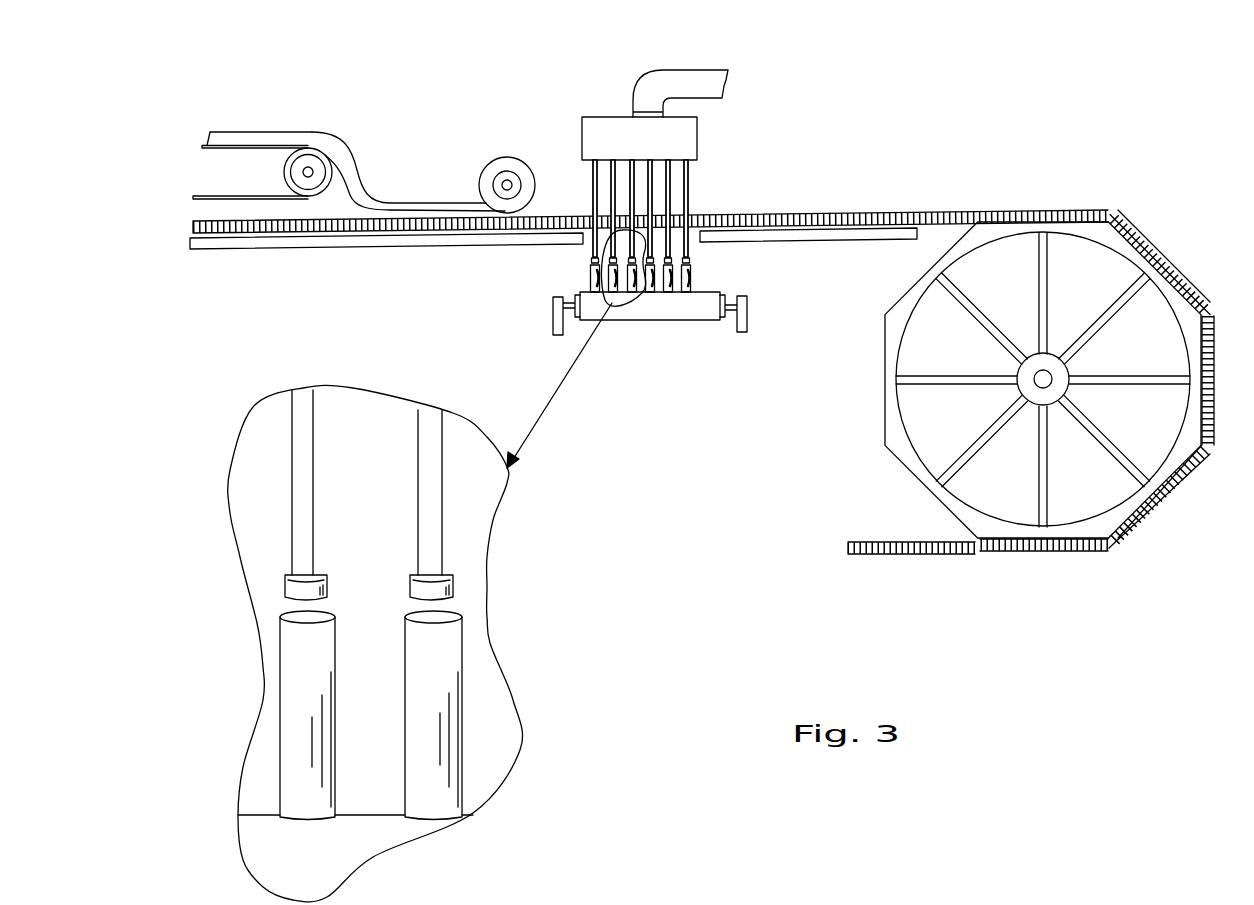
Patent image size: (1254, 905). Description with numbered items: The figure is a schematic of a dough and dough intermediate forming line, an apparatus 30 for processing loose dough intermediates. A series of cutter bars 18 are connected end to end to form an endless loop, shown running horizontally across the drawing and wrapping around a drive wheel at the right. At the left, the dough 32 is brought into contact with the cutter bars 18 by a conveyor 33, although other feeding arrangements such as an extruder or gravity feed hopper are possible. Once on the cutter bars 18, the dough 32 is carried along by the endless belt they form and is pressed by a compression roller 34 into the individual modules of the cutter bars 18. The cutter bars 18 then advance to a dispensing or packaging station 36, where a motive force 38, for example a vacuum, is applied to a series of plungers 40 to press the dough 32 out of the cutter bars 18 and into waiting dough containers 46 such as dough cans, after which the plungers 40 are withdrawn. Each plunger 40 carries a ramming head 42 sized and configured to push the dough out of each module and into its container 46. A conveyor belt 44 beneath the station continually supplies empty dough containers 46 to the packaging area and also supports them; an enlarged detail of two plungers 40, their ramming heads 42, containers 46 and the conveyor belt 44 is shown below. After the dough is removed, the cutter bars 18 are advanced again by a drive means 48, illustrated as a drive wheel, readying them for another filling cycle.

The cutter bars 18 is at (287, 222).
The apparatus 30 is at (883, 173).
The dough 32 is at (362, 200).
The conveyor 33 is at (202, 148).
The compression roller 34 is at (513, 168).
The dispensing or packaging station 36 is at (617, 137).
The motive force 38 is at (707, 83).
The plungers 40 is at (687, 197).
The ramming head 42 is at (688, 258).
The conveyor belt 44 is at (655, 307).
The dough containers 46 is at (593, 273).
The drive means 48 is at (913, 468).